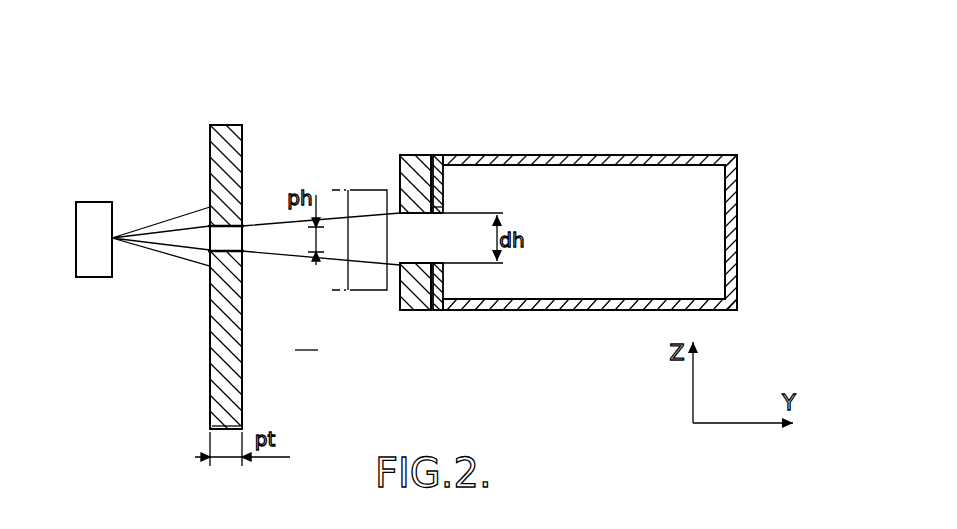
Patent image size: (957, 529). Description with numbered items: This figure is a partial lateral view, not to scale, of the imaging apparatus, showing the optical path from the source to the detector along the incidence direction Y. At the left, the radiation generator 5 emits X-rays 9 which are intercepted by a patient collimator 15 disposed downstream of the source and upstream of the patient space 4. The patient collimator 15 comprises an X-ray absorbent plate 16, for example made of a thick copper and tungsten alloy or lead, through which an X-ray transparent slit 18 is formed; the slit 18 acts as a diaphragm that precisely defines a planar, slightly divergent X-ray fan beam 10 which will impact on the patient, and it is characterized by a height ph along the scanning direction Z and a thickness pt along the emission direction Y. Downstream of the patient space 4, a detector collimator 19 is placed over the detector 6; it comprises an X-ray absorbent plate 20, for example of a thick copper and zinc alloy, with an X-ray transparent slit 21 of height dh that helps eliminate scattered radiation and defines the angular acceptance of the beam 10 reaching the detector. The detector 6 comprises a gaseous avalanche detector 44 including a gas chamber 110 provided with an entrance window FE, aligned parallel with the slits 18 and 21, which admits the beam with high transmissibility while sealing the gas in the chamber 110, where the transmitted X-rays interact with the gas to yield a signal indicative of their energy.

The patient space 4 is at (306, 338).
The radiation generator 5 is at (93, 260).
The detector 6 is at (733, 148).
The emitted X-rays 9 is at (167, 238).
The X-ray beam 10 is at (278, 238).
The patient collimator 15 is at (225, 415).
The X-ray absorbent plate 16 is at (225, 147).
The X-ray transparent slit 18 is at (247, 252).
The detector collimator 19 is at (417, 168).
The X-ray absorbent plate 20 is at (417, 297).
The X-ray transparent slit 21 is at (448, 285).
The gaseous detector 44 is at (550, 158).
The gas chamber 110 is at (692, 223).